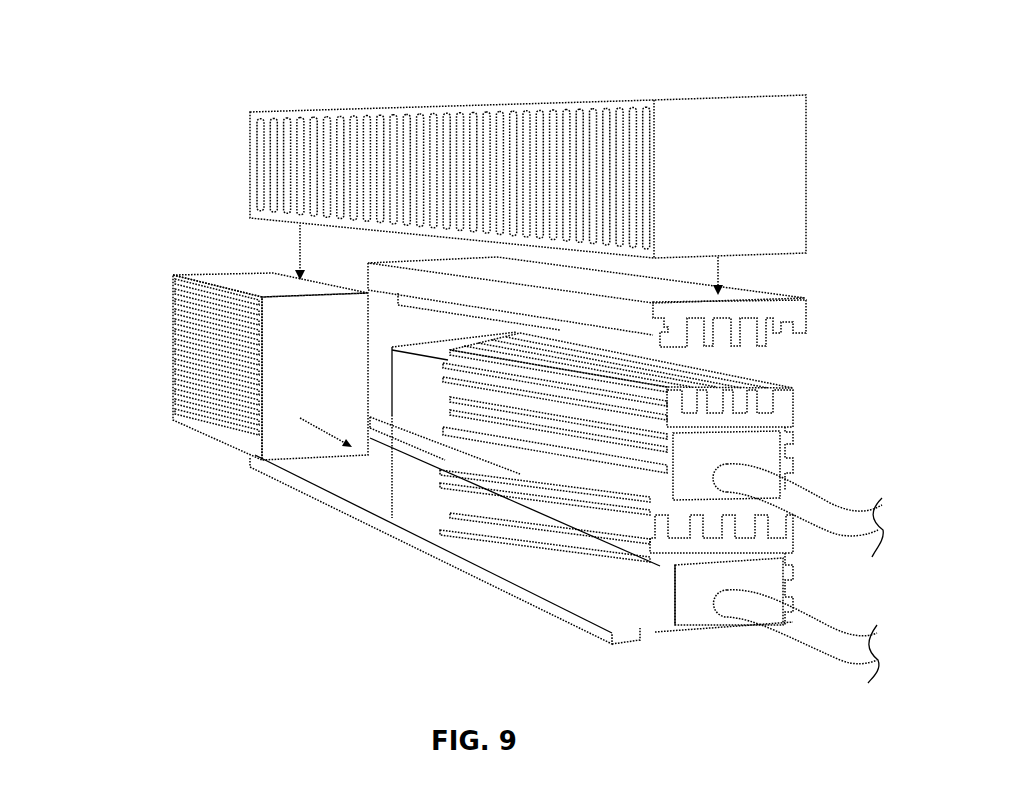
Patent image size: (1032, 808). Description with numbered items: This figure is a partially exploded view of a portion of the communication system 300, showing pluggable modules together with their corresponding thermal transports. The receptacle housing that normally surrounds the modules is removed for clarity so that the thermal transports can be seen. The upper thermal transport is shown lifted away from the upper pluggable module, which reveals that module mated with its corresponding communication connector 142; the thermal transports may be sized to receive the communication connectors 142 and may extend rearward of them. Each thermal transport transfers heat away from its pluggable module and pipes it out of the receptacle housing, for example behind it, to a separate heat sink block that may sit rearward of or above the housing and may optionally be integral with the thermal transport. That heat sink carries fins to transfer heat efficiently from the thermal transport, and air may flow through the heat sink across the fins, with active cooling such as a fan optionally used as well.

The communication system 300 is at (479, 385).
The communication connector 142 is at (418, 406).